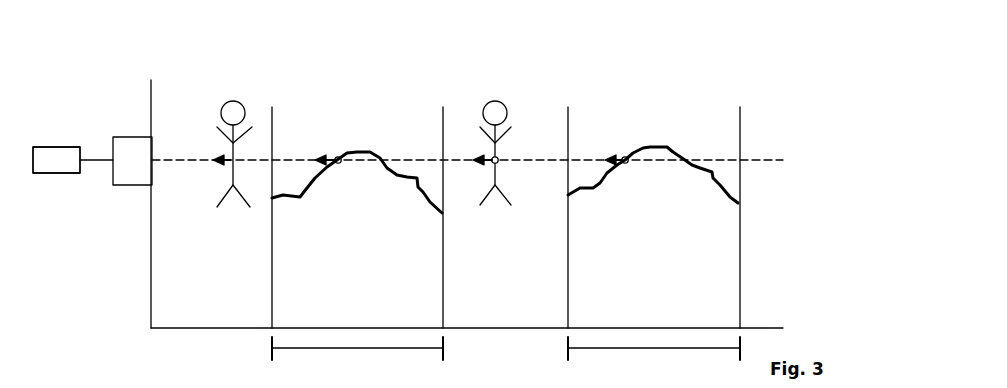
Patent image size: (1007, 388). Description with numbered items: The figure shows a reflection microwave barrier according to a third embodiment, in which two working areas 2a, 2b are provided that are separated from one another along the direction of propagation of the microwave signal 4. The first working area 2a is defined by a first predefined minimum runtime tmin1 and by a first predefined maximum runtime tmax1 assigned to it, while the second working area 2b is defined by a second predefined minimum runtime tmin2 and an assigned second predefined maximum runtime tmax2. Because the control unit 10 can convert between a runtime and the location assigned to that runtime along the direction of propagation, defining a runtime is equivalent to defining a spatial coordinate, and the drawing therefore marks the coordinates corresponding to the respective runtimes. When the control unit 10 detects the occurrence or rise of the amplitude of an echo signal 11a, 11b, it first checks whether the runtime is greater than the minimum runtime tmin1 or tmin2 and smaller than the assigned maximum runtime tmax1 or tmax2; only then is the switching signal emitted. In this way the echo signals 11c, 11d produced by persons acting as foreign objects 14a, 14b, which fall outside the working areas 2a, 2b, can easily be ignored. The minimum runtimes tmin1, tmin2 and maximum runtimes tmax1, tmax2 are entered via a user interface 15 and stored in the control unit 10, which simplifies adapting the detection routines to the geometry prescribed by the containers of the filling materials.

The control unit 10 is at (62, 152).
The user interface 15 is at (58, 174).
The microwave signal 4 is at (156, 160).
The foreign object 14a is at (252, 204).
The foreign object 14b is at (510, 193).
The echo signal 11a is at (317, 158).
The echo signal 11b is at (606, 158).
The echo signal 11c is at (214, 162).
The echo signal 11d is at (474, 158).
The first working area 2a is at (350, 348).
The second working area 2b is at (647, 348).
The first predefined minimum runtime tmin1 is at (270, 348).
The first predefined maximum runtime tmax1 is at (440, 347).
The second predefined minimum runtime tmin2 is at (566, 348).
The second predefined maximum runtime tmax2 is at (738, 346).